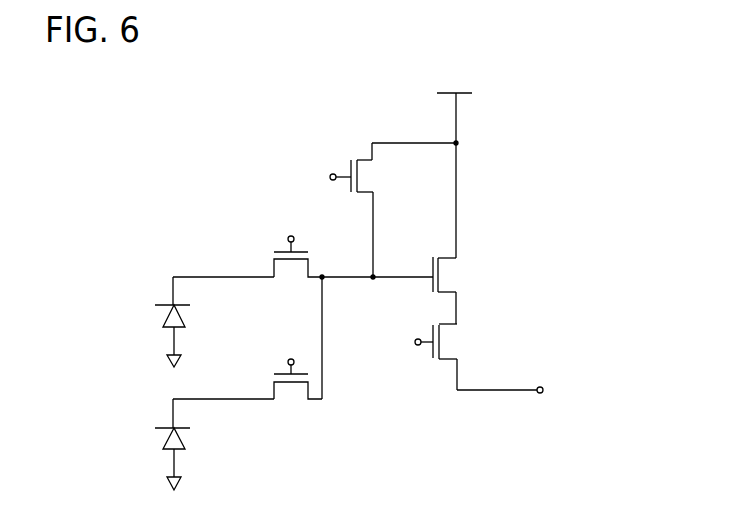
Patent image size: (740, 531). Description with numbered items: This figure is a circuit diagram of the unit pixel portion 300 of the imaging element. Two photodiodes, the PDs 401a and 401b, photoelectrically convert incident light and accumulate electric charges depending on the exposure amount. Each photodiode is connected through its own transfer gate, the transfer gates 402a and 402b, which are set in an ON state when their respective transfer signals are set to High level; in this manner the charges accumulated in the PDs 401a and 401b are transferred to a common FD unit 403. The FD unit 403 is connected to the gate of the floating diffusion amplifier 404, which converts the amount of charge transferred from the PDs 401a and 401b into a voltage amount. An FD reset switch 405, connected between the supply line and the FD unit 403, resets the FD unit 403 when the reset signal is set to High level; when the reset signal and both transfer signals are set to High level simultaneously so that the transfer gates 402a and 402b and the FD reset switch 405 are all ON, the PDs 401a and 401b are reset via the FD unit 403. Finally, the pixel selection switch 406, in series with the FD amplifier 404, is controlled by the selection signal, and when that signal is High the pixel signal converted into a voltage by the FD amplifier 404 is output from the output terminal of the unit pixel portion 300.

The unit pixel portion 300 is at (217, 78).
The PD 401a is at (158, 316).
The PD 401b is at (160, 441).
The transfer gate 402a is at (253, 241).
The transfer gate 402b is at (256, 365).
The FD unit 403 is at (373, 279).
The floating diffusion amplifier 404 is at (448, 279).
The FD reset switch 405 is at (325, 197).
The pixel selection switch 406 is at (450, 342).